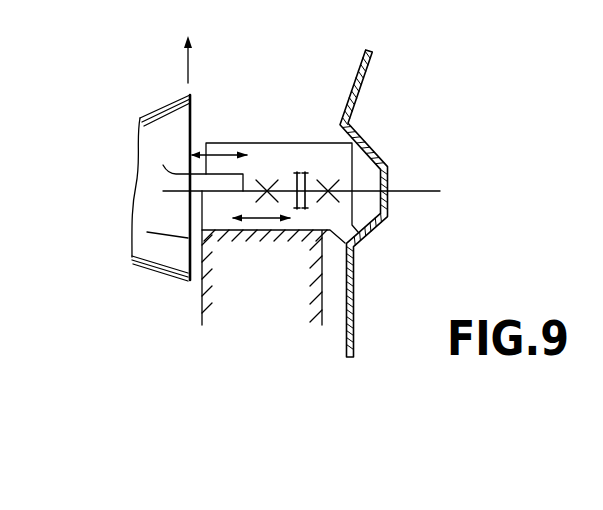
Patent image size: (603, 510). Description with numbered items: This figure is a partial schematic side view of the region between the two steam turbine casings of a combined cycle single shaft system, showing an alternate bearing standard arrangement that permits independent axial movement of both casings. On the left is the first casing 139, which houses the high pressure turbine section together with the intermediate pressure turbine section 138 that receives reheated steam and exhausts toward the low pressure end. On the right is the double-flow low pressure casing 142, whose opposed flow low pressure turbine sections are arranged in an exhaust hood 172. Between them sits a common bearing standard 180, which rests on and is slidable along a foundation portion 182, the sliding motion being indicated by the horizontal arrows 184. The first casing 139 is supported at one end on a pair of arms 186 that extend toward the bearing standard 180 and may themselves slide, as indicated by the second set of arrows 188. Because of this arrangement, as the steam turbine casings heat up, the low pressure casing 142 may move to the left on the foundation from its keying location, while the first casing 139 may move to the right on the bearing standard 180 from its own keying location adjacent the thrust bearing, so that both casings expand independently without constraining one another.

The intermediate pressure turbine section 138 is at (153, 268).
The first casing 139 is at (156, 96).
The double-flow low pressure casing 142 is at (361, 52).
The exhaust hood 172 is at (361, 194).
The common bearing standard 180 is at (322, 103).
The foundation portion 182 is at (200, 320).
The arrows 184 is at (264, 220).
The pair of arms 186 is at (193, 178).
The arrows 188 is at (216, 155).